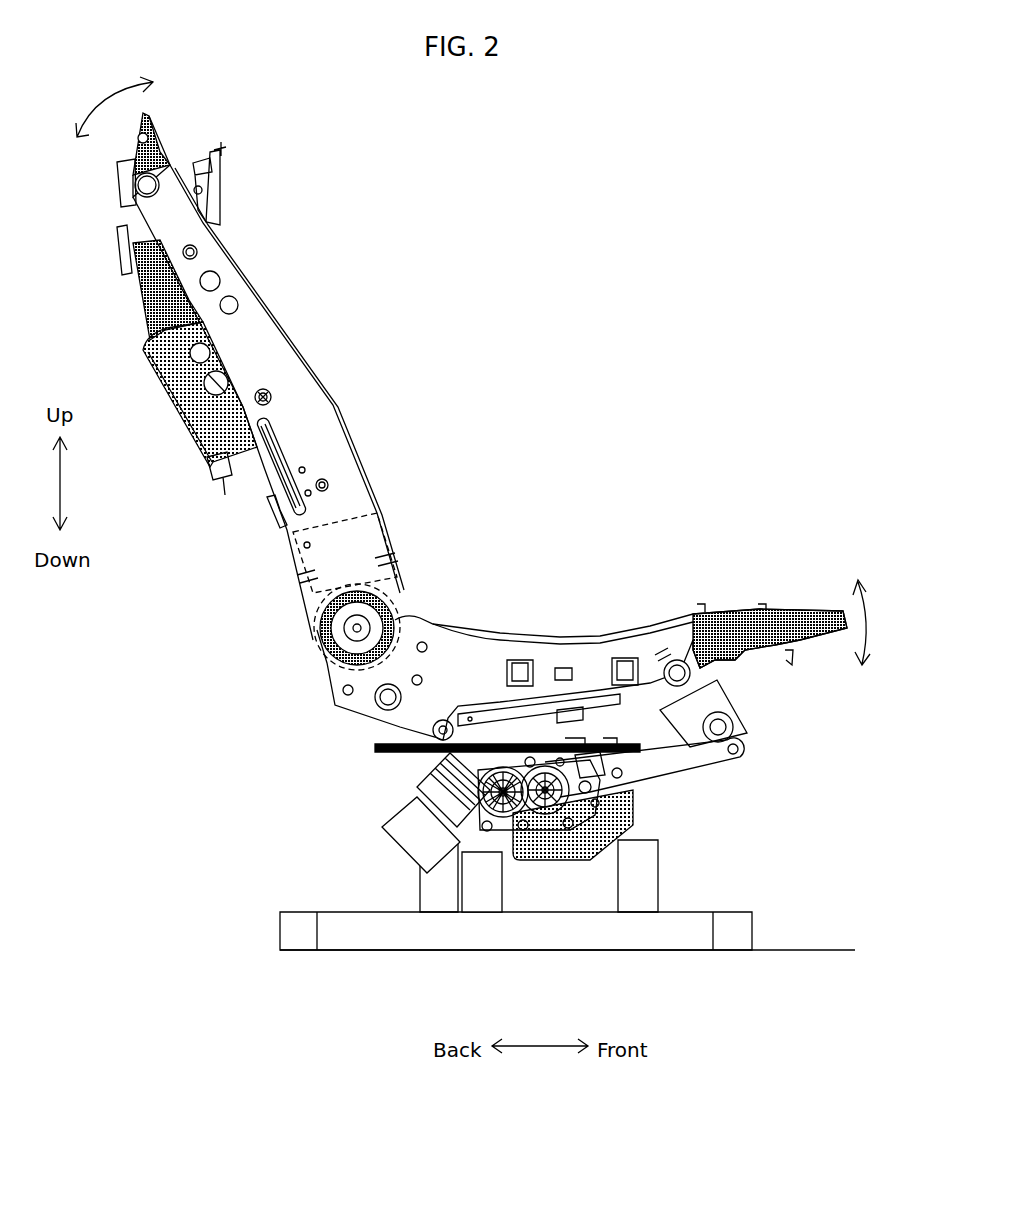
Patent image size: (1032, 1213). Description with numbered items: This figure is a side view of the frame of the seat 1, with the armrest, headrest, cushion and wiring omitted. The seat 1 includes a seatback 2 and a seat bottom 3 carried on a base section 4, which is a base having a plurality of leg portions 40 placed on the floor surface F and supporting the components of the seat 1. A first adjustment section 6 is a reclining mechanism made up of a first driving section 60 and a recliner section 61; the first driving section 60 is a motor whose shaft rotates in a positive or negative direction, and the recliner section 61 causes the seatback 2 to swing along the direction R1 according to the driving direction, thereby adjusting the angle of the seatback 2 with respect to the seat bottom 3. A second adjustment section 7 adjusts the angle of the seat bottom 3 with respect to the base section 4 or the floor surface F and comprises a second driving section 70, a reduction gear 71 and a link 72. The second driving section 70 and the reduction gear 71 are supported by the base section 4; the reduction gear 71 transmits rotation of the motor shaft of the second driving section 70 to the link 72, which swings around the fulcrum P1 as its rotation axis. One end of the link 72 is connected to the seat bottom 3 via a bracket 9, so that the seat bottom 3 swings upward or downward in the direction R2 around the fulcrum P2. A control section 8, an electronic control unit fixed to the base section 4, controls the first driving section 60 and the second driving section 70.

The seat 1 is at (747, 117).
The seatback 2 is at (278, 317).
The seat bottom 3 is at (440, 627).
The base section 4 is at (734, 872).
The leg portions 40 is at (658, 867).
The first adjustment section 6 is at (450, 513).
The first driving section 60 is at (403, 540).
The recliner section 61 is at (403, 580).
The second adjustment section 7 is at (673, 510).
The second driving section 70 is at (505, 772).
The reduction gear 71 is at (533, 765).
The link 72 is at (590, 760).
The control section 8 is at (483, 902).
The bracket 9 is at (735, 722).
The fulcrum P1 is at (622, 775).
The fulcrum P2 is at (437, 731).
The floor surface F is at (815, 949).
The direction R1 is at (104, 98).
The direction R2 is at (870, 622).